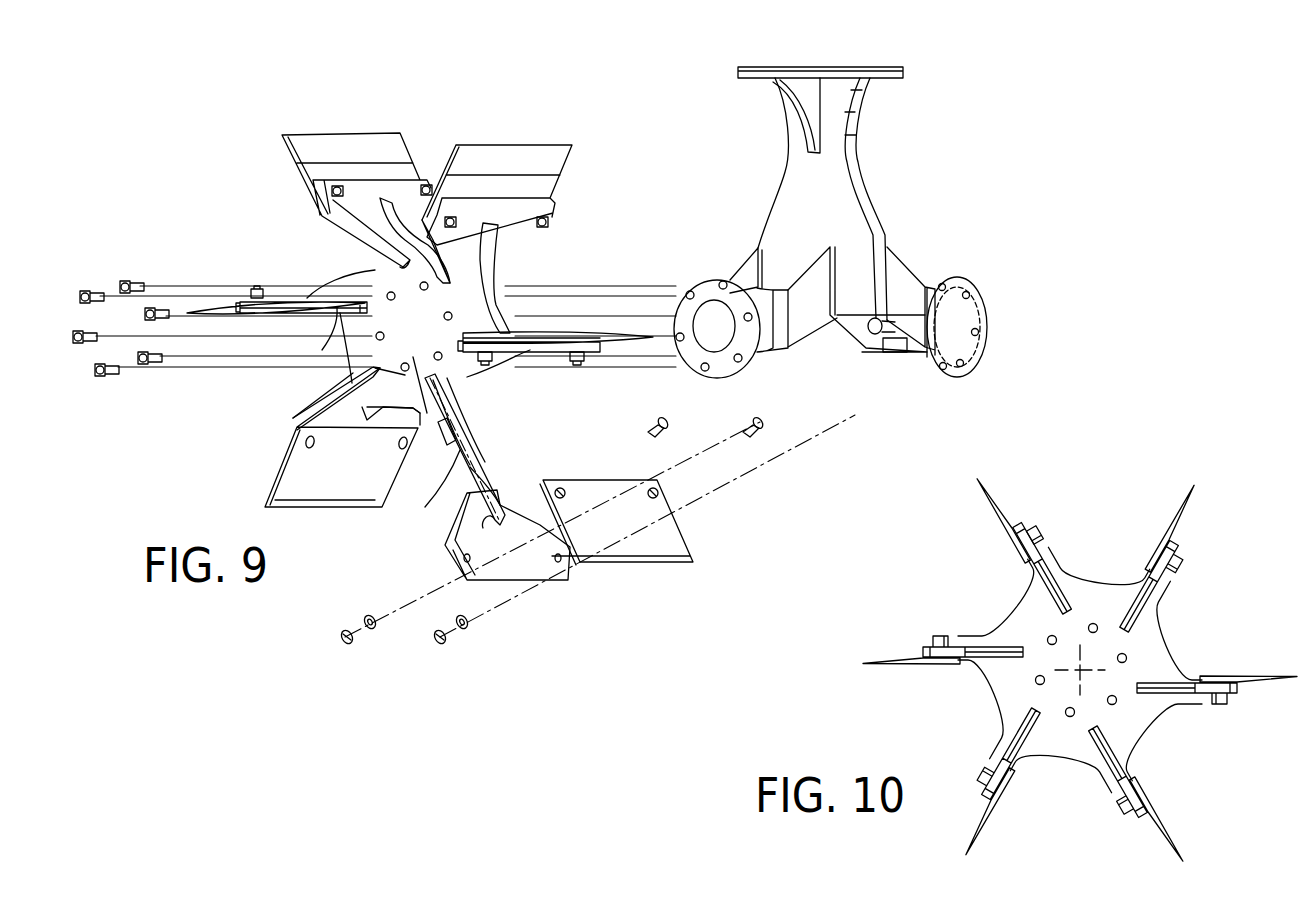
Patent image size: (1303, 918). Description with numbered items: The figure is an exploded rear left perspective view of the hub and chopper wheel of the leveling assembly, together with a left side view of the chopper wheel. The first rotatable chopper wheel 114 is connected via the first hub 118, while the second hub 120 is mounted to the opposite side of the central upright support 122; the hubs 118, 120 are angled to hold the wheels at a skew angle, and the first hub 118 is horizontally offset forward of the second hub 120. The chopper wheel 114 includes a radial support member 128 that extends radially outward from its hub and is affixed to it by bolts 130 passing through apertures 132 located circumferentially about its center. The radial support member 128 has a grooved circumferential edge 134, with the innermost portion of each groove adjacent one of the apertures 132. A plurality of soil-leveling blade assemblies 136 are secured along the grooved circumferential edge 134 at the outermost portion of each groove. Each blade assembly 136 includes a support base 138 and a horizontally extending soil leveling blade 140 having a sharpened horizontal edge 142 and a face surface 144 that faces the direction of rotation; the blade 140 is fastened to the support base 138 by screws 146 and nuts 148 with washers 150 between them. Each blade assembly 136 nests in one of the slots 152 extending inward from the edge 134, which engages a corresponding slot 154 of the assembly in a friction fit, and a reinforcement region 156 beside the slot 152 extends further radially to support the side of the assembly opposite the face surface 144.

In FIG. 9, the first rotatable chopper wheel 114 is at (330, 117).
In FIG. 9, the first hub 118 is at (705, 282).
In FIG. 9, the second hub 120 is at (986, 300).
In FIG. 9, the central upright support 122 is at (832, 197).
In FIG. 9, the radial support member 128 is at (378, 292).
In FIG. 10, the radial support member 128 is at (1089, 604).
In FIG. 9, the bolts 130 is at (124, 285).
In FIG. 9, the apertures 132 is at (402, 367).
In FIG. 10, the apertures 132 is at (1212, 702).
In FIG. 9, the grooved circumferential edge 134 is at (488, 278).
In FIG. 10, the grooved circumferential edge 134 is at (1160, 640).
In FIG. 9, the soil-leveling blade assembly 136 is at (405, 136).
In FIG. 9, the support base 138 is at (530, 558).
In FIG. 10, the support base 138 is at (1070, 602).
In FIG. 9, the soil leveling blade 140 is at (640, 530).
In FIG. 10, the soil leveling blade 140 is at (1012, 501).
In FIG. 9, the sharpened horizontal edge 142 is at (620, 563).
In FIG. 10, the sharpened horizontal edge 142 is at (978, 483).
In FIG. 9, the face surface 144 is at (663, 525).
In FIG. 10, the face surface 144 is at (1000, 532).
In FIG. 9, the screws 146 is at (752, 440).
In FIG. 9, the nuts 148 is at (352, 642).
In FIG. 9, the washers 150 is at (458, 618).
In FIG. 9, the slots 152 is at (452, 433).
In FIG. 9, the slot 154 is at (483, 492).
In FIG. 9, the reinforcement region 156 is at (436, 430).